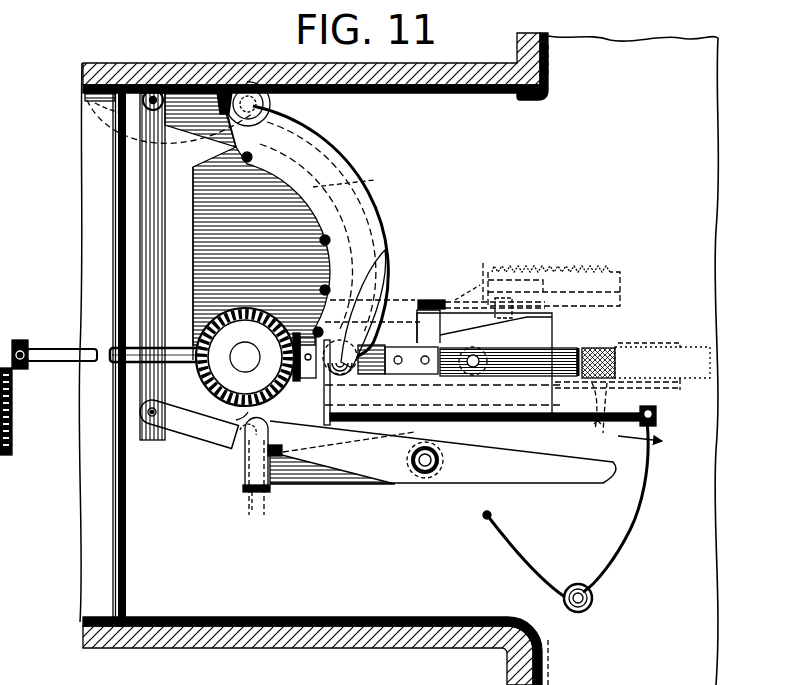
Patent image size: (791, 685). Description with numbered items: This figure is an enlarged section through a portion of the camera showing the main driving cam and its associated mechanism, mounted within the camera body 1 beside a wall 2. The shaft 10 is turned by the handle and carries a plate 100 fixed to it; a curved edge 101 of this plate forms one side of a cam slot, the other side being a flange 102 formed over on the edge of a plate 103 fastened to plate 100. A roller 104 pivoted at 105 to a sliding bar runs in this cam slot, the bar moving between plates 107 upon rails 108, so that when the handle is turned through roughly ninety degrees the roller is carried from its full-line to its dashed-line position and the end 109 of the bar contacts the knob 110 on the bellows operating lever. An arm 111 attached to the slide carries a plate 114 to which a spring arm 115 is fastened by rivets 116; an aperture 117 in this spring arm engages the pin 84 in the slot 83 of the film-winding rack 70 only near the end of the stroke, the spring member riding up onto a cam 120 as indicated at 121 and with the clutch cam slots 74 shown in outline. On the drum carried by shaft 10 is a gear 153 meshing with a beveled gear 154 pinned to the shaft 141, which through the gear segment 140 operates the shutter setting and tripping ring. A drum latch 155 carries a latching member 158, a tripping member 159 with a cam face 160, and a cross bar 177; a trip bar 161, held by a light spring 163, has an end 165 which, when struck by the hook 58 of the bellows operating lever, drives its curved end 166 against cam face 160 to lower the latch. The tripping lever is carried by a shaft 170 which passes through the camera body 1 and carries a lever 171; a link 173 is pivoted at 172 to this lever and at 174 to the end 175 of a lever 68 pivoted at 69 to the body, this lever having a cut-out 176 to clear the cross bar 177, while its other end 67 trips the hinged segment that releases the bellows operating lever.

The camera body 1 is at (468, 78).
The machine side wall (broken away) 2 is at (705, 127).
The shaft 10 is at (197, 348).
The hook 58 is at (596, 440).
The end of lever 67 is at (593, 468).
The lever 68 is at (490, 463).
The pivot 69 is at (425, 474).
The rack 70 is at (583, 282).
The cam slots 74 is at (87, 100).
The slot 83 is at (534, 270).
The pin 84 is at (540, 330).
The plate 100 is at (261, 253).
The curved edge 101 is at (355, 186).
The flange 102 is at (358, 202).
The plate 103 is at (323, 248).
The roller 104 is at (343, 375).
The pivot 105 is at (392, 282).
The plates 107 is at (590, 348).
The rails 108 is at (633, 345).
The end of bar 109 is at (502, 388).
The knob 110 is at (612, 362).
The arm 111 is at (408, 345).
The plate 114 is at (430, 292).
The spring arm 115 is at (433, 300).
The rivets 116 is at (343, 353).
The aperture 117 is at (452, 378).
The cam 120 is at (476, 278).
The pin 121 is at (440, 308).
The gear segment 140 is at (14, 424).
The shaft 141 is at (75, 348).
The gear 153 is at (218, 405).
The beveled gear 154 is at (292, 408).
The drum latch 155 is at (293, 477).
The latching member 158 is at (224, 423).
The tripping member 159 is at (246, 488).
The cam face 160 is at (246, 470).
The trip bar 161 is at (562, 420).
The spring 163 is at (633, 526).
The end of trip bar 165 is at (656, 420).
The curved end 166 is at (349, 450).
The shaft 170 is at (276, 68).
The lever 171 is at (216, 70).
The pivot 172 is at (160, 72).
The link 173 is at (145, 180).
The pivot 174 is at (148, 408).
The end of lever 175 is at (180, 420).
The cut-out 176 is at (246, 448).
The cross bar 177 is at (262, 495).